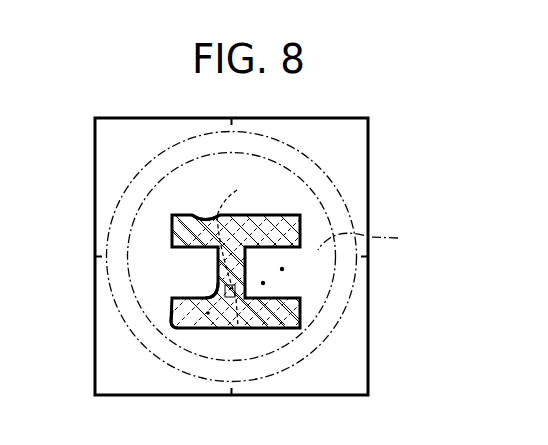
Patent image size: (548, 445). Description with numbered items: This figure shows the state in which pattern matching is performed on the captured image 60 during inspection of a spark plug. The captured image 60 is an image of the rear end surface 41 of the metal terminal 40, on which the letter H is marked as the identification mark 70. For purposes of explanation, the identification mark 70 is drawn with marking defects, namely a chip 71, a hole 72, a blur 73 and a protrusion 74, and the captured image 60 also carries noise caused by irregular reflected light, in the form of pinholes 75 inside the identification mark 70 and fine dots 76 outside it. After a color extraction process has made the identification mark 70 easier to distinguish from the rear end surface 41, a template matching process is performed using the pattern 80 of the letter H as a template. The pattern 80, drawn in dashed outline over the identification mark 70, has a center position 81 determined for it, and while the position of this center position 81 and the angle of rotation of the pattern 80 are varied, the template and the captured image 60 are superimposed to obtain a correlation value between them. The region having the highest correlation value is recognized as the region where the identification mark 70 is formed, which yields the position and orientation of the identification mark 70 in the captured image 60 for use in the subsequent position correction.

The captured image 60 is at (95, 167).
The metal terminal 40 is at (334, 171).
The rear end surface 41 is at (369, 241).
The identification mark 70 is at (307, 211).
The chip 71 is at (203, 218).
The hole 72 is at (237, 297).
The blur 73 is at (206, 292).
The protrusion 74 is at (166, 320).
The pinholes 75 is at (228, 261).
The fine dots 76 is at (263, 283).
The pattern 80 is at (229, 246).
The center position 81 is at (247, 270).